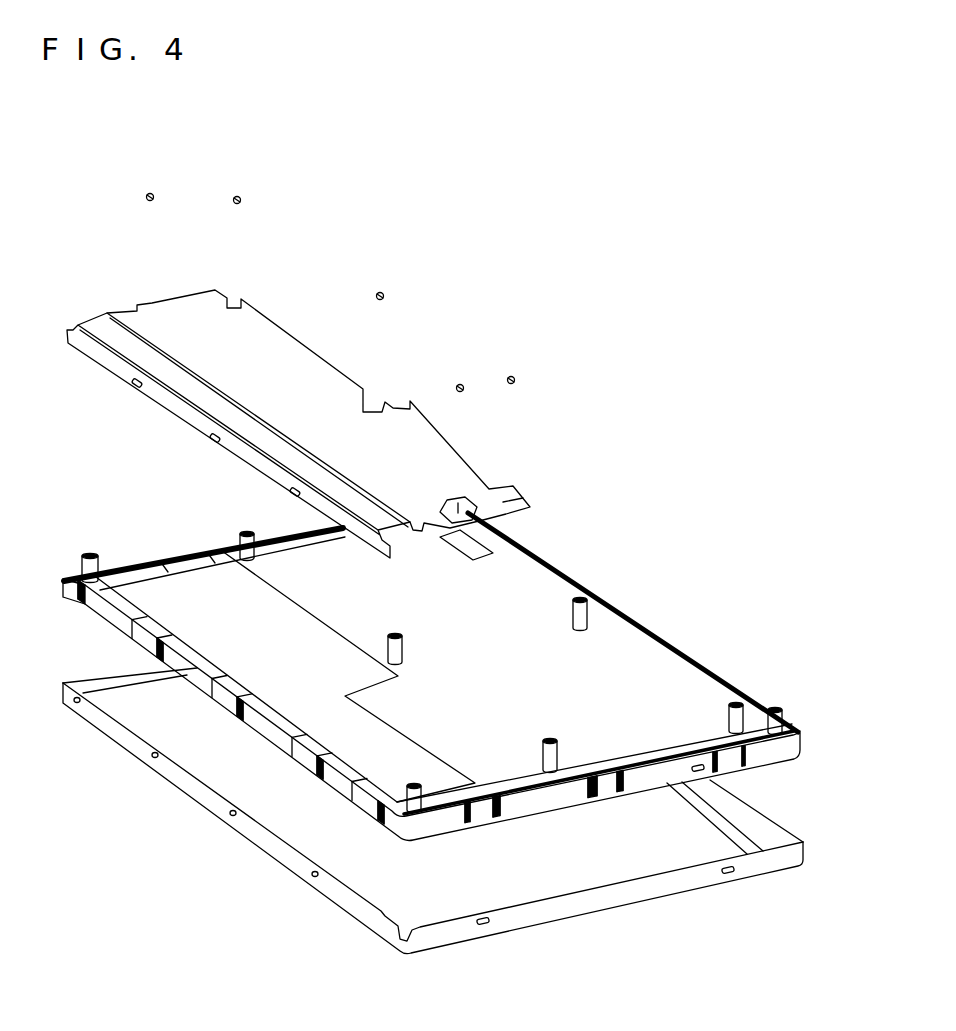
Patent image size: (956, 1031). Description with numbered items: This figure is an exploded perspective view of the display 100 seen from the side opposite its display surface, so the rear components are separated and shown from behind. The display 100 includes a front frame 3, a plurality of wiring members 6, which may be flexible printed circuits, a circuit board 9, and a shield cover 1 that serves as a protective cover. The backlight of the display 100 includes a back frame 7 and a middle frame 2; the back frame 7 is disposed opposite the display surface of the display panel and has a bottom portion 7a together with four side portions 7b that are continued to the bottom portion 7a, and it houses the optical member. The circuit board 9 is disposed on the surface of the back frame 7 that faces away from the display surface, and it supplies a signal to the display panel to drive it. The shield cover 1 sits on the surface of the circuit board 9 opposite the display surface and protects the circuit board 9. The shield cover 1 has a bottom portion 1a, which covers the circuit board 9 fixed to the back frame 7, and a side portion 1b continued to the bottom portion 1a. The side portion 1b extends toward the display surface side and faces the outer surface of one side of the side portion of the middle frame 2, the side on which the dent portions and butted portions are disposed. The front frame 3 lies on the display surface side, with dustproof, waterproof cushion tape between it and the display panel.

The display 100 is at (93, 137).
The shield cover 1 is at (368, 377).
The bottom portion 1a is at (258, 354).
The side portion 1b is at (176, 408).
The middle frame 2 is at (770, 753).
The front frame 3 is at (578, 905).
The wiring members 6 is at (100, 610).
The back frame 7 is at (563, 570).
The bottom portion 7a is at (620, 657).
The side portions 7b is at (607, 790).
The circuit board 9 is at (290, 627).